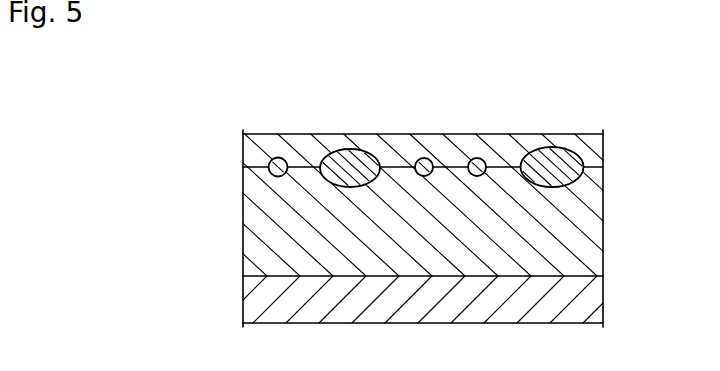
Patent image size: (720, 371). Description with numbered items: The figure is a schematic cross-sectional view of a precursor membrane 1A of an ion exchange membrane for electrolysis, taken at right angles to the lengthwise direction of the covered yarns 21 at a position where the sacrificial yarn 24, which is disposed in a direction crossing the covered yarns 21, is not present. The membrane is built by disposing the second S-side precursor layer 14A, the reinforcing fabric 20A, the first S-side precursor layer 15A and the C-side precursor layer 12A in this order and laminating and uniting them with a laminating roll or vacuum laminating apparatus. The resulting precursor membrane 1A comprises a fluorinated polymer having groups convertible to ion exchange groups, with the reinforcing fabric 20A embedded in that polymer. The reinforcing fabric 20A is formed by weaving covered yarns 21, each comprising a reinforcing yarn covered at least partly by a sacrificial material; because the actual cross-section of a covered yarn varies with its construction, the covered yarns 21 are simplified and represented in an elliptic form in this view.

The precursor membrane 1A is at (288, 98).
The precursor layer (C') 12A is at (592, 302).
The precursor layer (S'-2) 14A is at (243, 155).
The precursor layer (S'-1) 15A is at (243, 197).
The reinforcing fabric 20A is at (580, 148).
The covered yarn 21 is at (354, 150).
The sacrificial yarn 24 is at (274, 158).